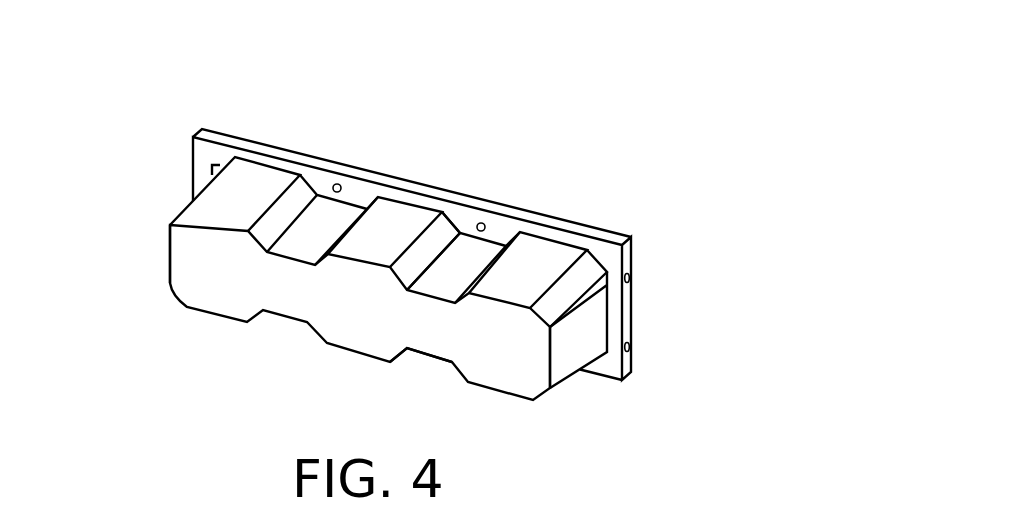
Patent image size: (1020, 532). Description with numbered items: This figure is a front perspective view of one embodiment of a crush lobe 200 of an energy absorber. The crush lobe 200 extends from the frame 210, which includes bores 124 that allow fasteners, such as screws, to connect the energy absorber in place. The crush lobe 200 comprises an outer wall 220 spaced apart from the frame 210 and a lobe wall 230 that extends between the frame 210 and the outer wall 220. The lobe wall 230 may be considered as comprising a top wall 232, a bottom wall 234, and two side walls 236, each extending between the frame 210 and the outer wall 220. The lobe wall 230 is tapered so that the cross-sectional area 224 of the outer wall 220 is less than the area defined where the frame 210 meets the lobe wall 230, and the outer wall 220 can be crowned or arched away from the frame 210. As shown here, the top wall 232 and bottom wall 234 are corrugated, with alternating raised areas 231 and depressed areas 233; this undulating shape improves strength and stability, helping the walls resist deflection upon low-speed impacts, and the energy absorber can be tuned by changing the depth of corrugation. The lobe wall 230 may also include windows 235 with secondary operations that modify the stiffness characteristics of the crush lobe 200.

The crush lobe 200 is at (412, 78).
The frame 210 is at (220, 124).
The bores 124 is at (342, 185).
The outer wall 220 is at (207, 305).
The cross-sectional area of the outer wall 224 is at (385, 315).
The lobe wall 230 is at (572, 352).
The raised areas 231 is at (248, 177).
The top wall 232 is at (459, 224).
The depressed areas 233 is at (320, 207).
The bottom wall 234 is at (422, 352).
The windows 235 is at (603, 270).
The side walls 236 is at (166, 254).